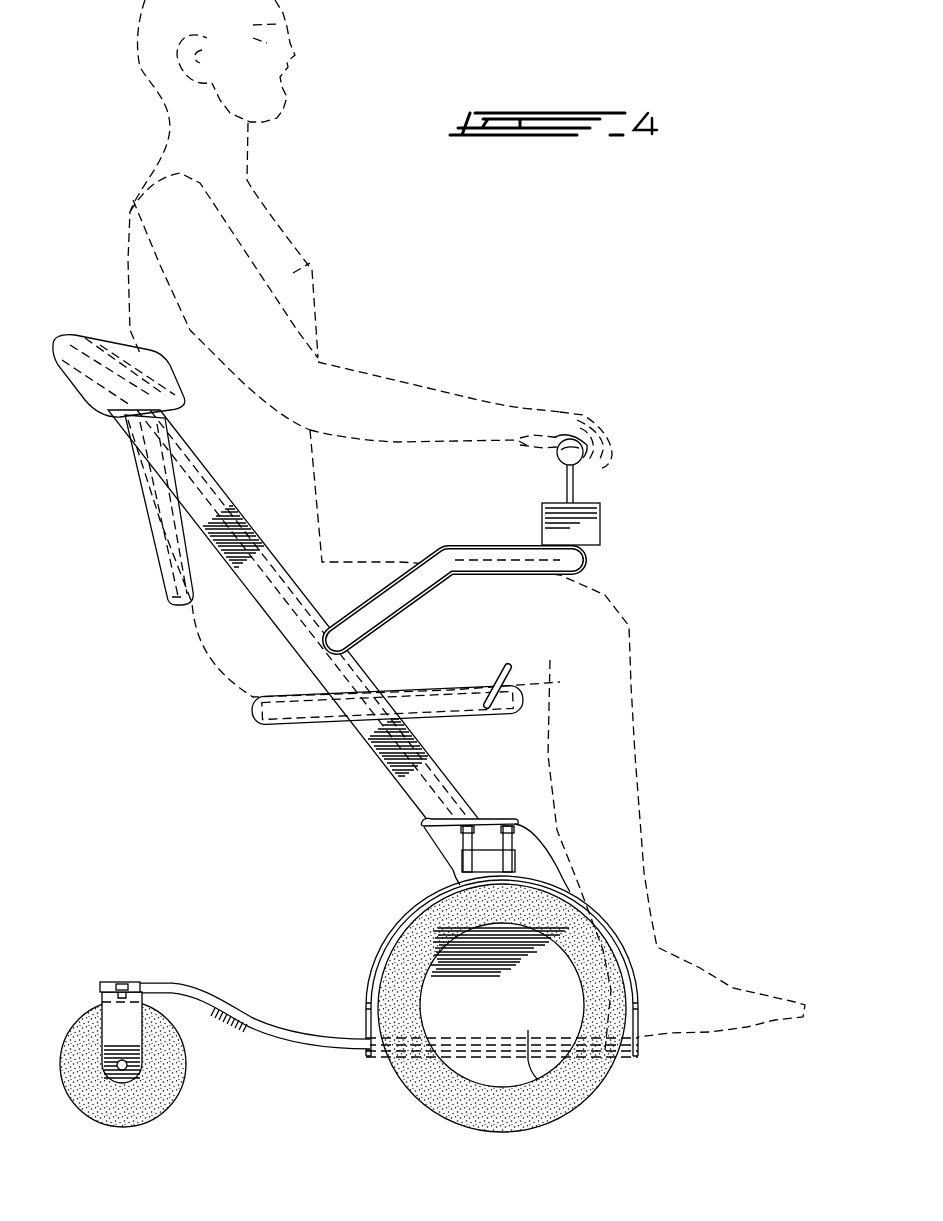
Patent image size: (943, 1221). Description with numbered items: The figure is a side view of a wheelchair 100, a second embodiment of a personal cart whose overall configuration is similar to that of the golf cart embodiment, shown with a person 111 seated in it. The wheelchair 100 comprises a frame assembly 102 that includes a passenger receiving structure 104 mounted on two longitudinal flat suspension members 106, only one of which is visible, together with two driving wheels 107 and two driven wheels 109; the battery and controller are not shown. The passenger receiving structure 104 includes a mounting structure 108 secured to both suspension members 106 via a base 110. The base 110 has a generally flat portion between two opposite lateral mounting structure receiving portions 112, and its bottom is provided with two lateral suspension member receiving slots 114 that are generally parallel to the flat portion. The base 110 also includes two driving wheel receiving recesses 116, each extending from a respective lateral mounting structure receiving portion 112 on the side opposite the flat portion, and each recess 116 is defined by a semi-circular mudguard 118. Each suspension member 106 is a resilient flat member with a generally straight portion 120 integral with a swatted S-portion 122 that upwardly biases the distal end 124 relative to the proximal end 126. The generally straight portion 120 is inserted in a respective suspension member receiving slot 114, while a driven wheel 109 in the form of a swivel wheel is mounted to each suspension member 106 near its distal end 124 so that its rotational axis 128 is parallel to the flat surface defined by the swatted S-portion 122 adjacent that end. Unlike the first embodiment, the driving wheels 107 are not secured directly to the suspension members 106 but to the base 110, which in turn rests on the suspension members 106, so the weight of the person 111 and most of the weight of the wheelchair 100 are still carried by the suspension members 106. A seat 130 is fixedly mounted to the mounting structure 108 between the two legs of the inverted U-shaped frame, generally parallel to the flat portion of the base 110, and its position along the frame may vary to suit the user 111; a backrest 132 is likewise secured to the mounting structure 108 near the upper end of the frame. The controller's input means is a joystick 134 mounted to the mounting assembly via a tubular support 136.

The wheelchair 100 is at (405, 120).
The frame assembly 102 is at (527, 959).
The passenger receiving structure 104 is at (294, 616).
The suspension member 106 is at (288, 1038).
The driving wheel 107 is at (607, 1083).
The mounting structure 108 is at (413, 782).
The driven wheel 109 is at (143, 1010).
The base 110 is at (587, 837).
The person 111 is at (293, 273).
The lateral mounting structure receiving portion 112 is at (531, 867).
The suspension member receiving slot 114 is at (364, 1055).
The driving wheel receiving recess 116 is at (407, 963).
The semi-circular mudguard 118 is at (588, 928).
The generally straight portion 120 is at (538, 1080).
The swatted S-portion 122 is at (140, 983).
The distal end 124 is at (100, 984).
The proximal end 126 is at (640, 1043).
The rotational axis 128 is at (128, 1065).
The seat 130 is at (443, 705).
The backrest 132 is at (160, 510).
The joystick 134 is at (590, 530).
The tubular support 136 is at (512, 558).